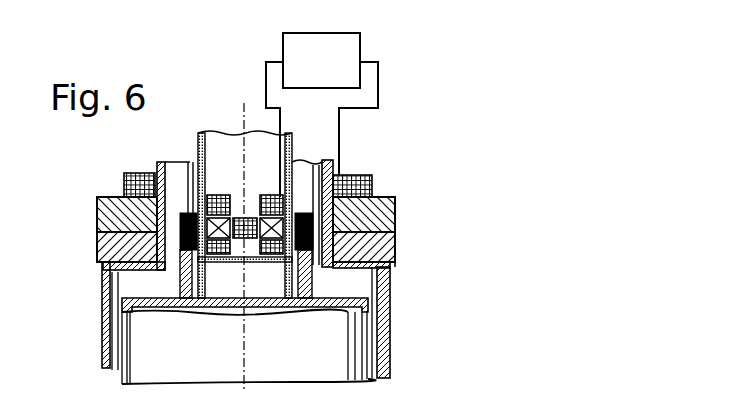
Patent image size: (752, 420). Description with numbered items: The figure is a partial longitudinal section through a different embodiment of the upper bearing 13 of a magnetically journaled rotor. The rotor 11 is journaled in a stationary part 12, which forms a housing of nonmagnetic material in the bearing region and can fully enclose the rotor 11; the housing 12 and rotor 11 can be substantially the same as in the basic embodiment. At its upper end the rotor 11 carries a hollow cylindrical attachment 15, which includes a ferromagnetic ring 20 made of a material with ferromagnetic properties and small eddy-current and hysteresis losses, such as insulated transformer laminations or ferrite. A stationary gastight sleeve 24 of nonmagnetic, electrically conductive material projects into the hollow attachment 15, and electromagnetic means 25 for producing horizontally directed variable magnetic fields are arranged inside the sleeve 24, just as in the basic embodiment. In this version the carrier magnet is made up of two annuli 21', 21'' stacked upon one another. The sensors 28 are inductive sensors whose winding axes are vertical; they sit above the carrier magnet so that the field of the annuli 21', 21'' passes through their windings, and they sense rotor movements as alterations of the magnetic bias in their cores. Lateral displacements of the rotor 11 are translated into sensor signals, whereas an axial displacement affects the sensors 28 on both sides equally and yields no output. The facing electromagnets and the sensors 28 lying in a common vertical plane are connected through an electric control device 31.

The electric control device 31 is at (348, 52).
The sleeve 24 is at (203, 141).
The ferromagnetic ring 20 is at (196, 163).
The electromagnetic means 25 is at (253, 197).
The upper bearing 13 is at (139, 171).
The sensor 28 is at (366, 178).
The annulus of carrier magnet 21' is at (277, 214).
The annulus of carrier magnet 21'' is at (280, 247).
The hollow cylindrical attachment 15 is at (174, 275).
The rotor 11 is at (350, 330).
The stationary part 12 is at (388, 355).